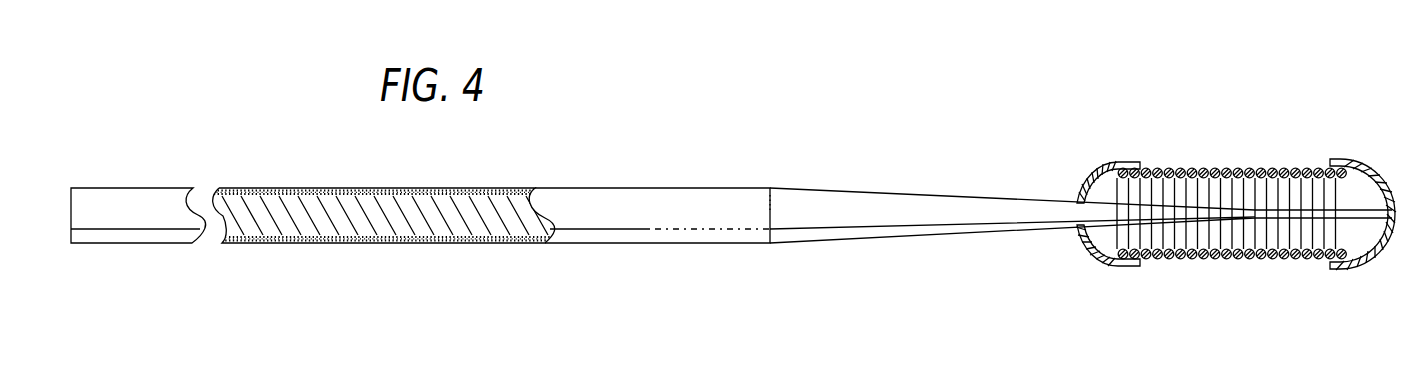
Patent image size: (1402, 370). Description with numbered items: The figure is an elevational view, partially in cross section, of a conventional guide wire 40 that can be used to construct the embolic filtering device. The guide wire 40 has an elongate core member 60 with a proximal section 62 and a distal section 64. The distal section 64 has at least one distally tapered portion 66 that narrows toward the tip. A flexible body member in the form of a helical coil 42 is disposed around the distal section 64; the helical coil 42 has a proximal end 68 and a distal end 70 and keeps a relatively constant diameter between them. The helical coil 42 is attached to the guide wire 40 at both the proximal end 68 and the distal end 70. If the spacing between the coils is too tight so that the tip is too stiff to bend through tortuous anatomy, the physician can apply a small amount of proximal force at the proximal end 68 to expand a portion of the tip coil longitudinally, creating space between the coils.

The proximal section 62 is at (154, 179).
The elongate core member 60 is at (350, 188).
The guide wire 40 is at (625, 173).
The distal section 64 is at (877, 122).
The distally tapered portion 66 is at (860, 238).
The helical coil 42 is at (1232, 170).
The proximal end 68 is at (1130, 260).
The distal end 70 is at (1340, 262).